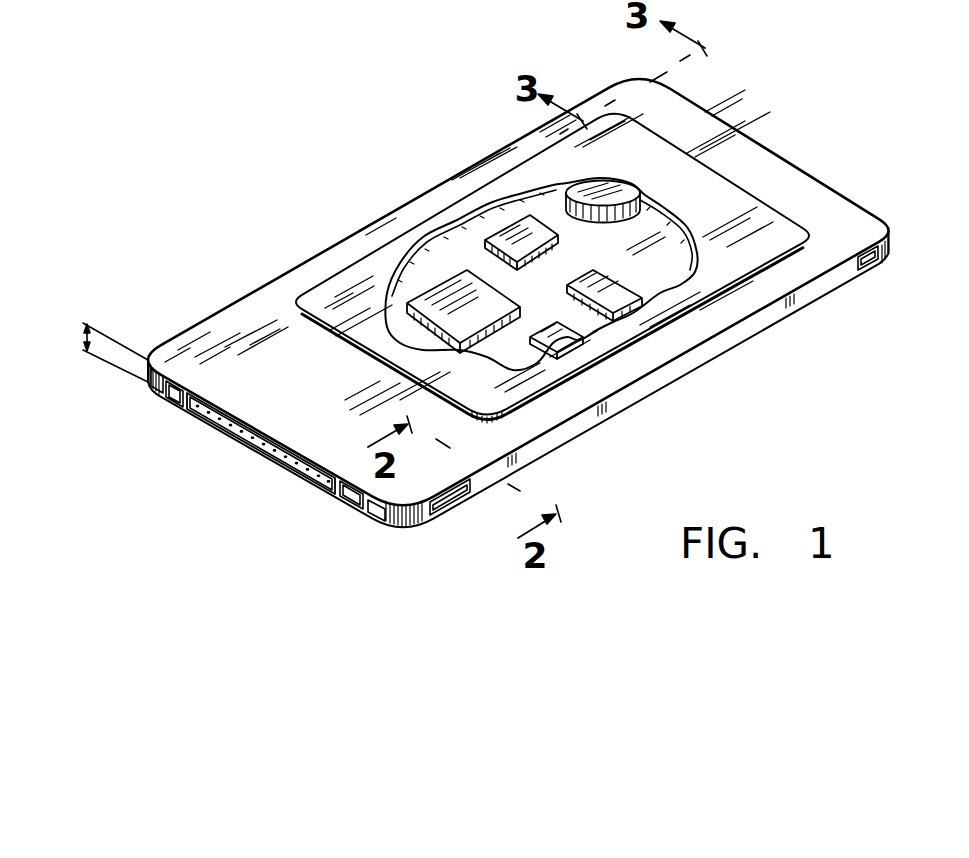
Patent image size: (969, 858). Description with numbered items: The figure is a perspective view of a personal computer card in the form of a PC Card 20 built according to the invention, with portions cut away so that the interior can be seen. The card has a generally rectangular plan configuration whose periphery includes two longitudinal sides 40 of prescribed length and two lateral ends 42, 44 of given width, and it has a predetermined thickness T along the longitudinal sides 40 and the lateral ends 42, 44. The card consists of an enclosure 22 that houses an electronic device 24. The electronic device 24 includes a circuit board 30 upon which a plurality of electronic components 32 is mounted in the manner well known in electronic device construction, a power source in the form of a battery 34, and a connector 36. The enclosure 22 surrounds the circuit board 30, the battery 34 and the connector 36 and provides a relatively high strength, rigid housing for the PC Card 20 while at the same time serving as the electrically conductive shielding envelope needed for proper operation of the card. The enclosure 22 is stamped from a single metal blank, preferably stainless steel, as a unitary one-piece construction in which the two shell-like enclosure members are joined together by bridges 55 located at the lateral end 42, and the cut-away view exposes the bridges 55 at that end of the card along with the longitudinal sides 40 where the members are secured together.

The PC Card 20 is at (777, 143).
The enclosure 22 is at (808, 193).
The electronic device 24 is at (643, 276).
The circuit board 30 is at (658, 292).
The electronic components 32 is at (497, 238).
The battery 34 is at (579, 190).
The connector 36 is at (217, 430).
The longitudinal sides 40 is at (258, 291).
The lateral end 42 is at (273, 467).
The lateral end 44 is at (708, 112).
The bridges 55 is at (168, 396).
The thickness T is at (86, 337).